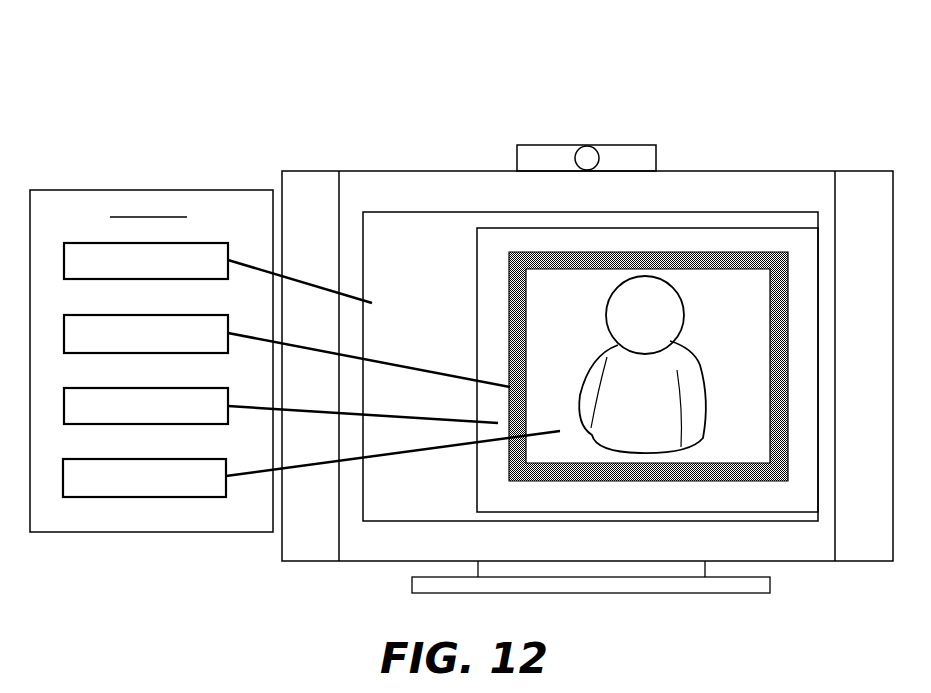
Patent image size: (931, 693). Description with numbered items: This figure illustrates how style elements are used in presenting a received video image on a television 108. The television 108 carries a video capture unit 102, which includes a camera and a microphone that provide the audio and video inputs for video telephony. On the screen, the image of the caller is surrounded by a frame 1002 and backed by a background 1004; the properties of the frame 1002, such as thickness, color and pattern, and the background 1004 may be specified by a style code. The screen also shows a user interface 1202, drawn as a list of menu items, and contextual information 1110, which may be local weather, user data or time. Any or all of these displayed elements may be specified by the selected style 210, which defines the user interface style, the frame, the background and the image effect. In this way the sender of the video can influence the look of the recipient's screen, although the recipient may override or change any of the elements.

The style 210 is at (120, 190).
The television 108 is at (317, 171).
The video capture unit 102 is at (600, 145).
The user interface 1202 is at (420, 235).
The contextual information 1110 is at (697, 238).
The frame 1002 is at (752, 252).
The background 1004 is at (776, 495).